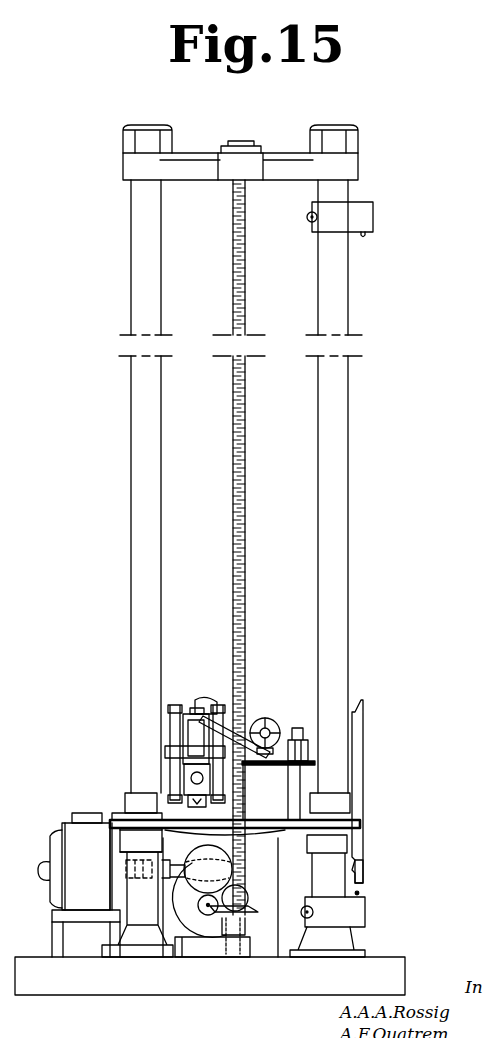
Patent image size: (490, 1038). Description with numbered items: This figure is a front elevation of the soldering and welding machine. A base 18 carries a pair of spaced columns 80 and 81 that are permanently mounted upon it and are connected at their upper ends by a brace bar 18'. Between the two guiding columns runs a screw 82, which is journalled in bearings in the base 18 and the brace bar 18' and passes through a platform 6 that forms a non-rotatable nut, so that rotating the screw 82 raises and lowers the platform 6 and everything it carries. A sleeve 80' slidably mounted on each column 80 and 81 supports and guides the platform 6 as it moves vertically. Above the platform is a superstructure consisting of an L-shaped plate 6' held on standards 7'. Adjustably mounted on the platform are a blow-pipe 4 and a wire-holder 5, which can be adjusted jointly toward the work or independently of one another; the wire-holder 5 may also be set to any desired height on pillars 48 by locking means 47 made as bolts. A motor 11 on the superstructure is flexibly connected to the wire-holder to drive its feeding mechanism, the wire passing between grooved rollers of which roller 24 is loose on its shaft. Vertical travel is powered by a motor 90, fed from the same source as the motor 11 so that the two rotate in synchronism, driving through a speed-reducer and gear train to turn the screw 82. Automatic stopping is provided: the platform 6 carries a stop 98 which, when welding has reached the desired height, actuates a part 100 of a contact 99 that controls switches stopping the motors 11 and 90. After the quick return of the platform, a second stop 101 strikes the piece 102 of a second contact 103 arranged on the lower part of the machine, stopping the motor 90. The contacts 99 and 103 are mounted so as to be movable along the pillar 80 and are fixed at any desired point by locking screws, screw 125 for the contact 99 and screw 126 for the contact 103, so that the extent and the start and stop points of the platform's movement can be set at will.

The brace bar 18' is at (240, 166).
The base 18 is at (210, 989).
The column 81 is at (131, 484).
The column 80 is at (357, 486).
The screw 82 is at (245, 487).
The contact 99 is at (340, 208).
The locking screw 125 is at (309, 222).
The part of the contact 100 is at (366, 237).
The stop 98 is at (358, 730).
The second stop 101 is at (357, 863).
The piece of the second contact 102 is at (359, 893).
The second contact 103 is at (357, 919).
The locking screw 126 is at (302, 906).
The sleeve 80' is at (237, 799).
The motor 90 is at (72, 822).
The pillars 48 is at (173, 727).
The locking means 47 is at (170, 752).
The blow-pipe 4 is at (178, 778).
The wire-holder 5 is at (207, 714).
The grooved roller 24 is at (244, 745).
The motor 11 is at (272, 722).
The standards 7' is at (278, 777).
The plate 6' is at (338, 748).
The platform 6 is at (271, 796).